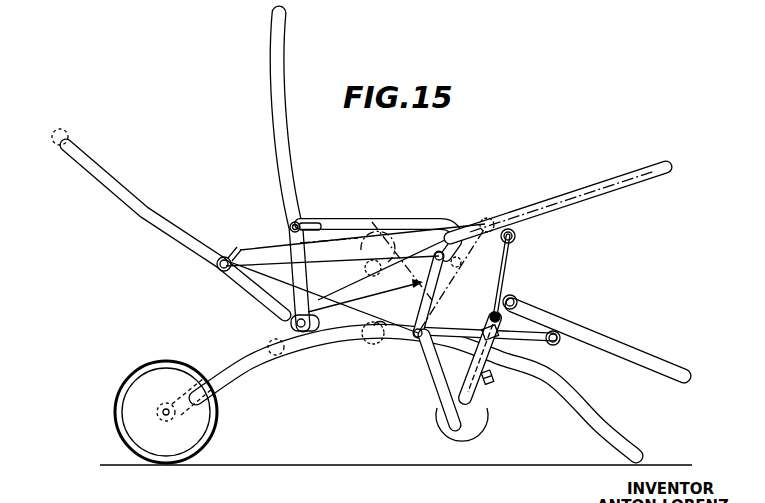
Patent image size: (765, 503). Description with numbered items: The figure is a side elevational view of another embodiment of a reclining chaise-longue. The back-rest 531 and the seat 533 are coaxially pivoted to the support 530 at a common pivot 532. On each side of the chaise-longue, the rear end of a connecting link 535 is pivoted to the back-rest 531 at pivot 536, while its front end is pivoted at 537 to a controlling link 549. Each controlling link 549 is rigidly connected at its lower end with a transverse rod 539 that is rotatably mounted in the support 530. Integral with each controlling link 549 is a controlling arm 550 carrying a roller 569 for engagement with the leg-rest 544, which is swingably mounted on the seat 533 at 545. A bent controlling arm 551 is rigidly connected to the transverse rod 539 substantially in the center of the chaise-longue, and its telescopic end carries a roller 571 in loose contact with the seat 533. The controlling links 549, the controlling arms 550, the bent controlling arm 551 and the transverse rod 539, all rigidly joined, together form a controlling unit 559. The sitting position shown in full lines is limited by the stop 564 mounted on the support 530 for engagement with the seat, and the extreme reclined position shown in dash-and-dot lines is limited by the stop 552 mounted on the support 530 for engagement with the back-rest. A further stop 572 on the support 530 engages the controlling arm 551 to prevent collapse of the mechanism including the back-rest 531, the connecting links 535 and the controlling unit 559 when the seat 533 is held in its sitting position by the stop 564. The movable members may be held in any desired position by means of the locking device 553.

The support 530 is at (233, 372).
The back-rest 531 is at (283, 143).
The pivot 532 is at (278, 350).
The seat 533 is at (368, 310).
The connecting link 535 is at (353, 217).
The pivot 536 is at (290, 223).
The pivot 537 is at (479, 205).
The transverse rod 539 is at (416, 343).
The leg-rest 544 is at (603, 334).
The pivot 545 is at (535, 273).
The controlling link 549 is at (375, 285).
The controlling arm 550 is at (527, 332).
The bent controlling arm 551 is at (488, 432).
The stop 552 is at (283, 316).
The locking device 553 is at (346, 196).
The controlling unit 559 is at (365, 268).
The stop 564 is at (387, 343).
The roller 569 is at (557, 344).
The roller 571 is at (518, 302).
The stop 572 is at (443, 394).